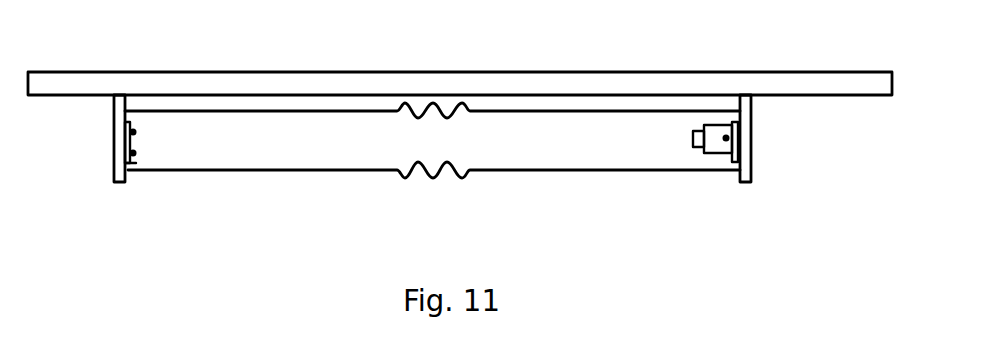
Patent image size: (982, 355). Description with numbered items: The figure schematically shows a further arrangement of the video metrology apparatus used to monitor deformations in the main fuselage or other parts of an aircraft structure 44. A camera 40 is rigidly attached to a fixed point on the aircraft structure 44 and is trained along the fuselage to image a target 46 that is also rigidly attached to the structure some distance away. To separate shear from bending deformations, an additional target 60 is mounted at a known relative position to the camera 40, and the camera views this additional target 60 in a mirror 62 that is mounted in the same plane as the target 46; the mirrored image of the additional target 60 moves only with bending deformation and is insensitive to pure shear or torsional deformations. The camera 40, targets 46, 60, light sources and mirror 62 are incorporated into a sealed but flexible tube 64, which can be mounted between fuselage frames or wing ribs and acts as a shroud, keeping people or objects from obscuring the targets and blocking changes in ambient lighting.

The camera 40 is at (706, 153).
The aircraft structure 44 is at (139, 70).
The target 46 is at (137, 133).
The additional target 60 is at (726, 140).
The mirror 62 is at (133, 166).
The sealed flexible tube 64 is at (508, 111).